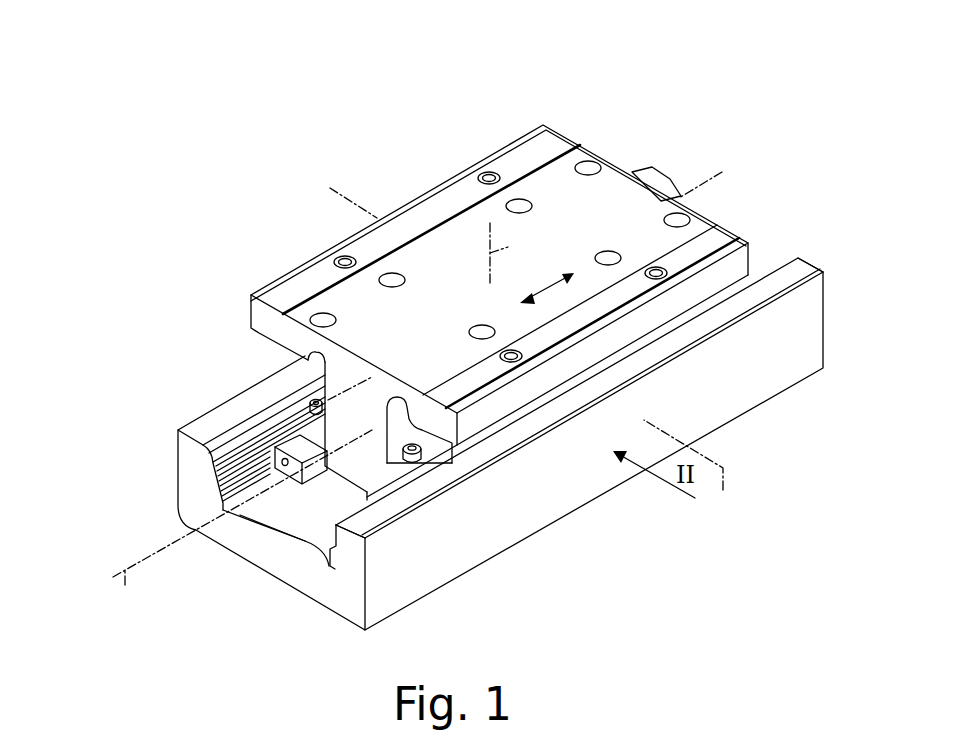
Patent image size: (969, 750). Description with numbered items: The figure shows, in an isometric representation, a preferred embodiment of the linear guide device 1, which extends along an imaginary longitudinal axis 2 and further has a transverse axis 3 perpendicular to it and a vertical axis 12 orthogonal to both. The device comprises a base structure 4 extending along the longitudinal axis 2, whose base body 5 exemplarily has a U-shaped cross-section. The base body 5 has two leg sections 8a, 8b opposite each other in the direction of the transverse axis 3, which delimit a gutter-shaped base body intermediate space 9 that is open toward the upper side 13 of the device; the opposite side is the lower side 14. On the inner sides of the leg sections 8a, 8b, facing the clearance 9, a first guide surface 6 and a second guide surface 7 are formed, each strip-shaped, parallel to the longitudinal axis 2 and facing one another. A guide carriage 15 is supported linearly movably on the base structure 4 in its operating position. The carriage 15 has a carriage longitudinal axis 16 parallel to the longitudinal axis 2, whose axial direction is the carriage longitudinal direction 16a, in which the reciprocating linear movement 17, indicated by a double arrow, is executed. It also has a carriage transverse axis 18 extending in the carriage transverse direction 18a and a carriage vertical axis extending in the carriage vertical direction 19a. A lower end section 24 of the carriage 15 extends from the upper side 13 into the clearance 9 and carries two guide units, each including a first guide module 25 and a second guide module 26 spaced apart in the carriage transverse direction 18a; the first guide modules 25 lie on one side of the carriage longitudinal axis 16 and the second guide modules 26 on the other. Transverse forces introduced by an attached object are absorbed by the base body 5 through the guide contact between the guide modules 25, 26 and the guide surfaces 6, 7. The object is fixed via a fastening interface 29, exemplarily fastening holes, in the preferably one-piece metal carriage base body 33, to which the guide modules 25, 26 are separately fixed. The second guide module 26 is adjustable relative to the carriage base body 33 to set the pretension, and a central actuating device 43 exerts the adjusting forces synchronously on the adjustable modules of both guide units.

The linear guide device 1 is at (619, 83).
The longitudinal axis 2 is at (242, 522).
The transverse axis 3 is at (689, 466).
The base structure 4 is at (816, 350).
The base body 5 is at (187, 471).
The first guide surface 6 is at (222, 484).
The second guide surface 7 is at (326, 552).
The leg section 8a is at (238, 428).
The leg section 8b is at (353, 557).
The base body intermediate space 9 is at (258, 521).
The vertical axis 12 is at (490, 223).
The upper side 13 is at (389, 130).
The lower side 14 is at (613, 516).
The guide carriage 15 is at (304, 281).
The carriage longitudinal axis 16 is at (679, 198).
The carriage longitudinal direction 16a is at (700, 185).
The linear movement 17 is at (553, 284).
The carriage transverse axis 18 is at (377, 218).
The carriage transverse direction 18a is at (353, 203).
The carriage vertical direction 19a is at (499, 250).
The lower end section 24 is at (330, 540).
The first guide module 25 is at (300, 438).
The second guide module 26 is at (413, 508).
The fastening interface 29 is at (485, 175).
The carriage base body 33 is at (452, 205).
The central actuating device 43 is at (361, 470).